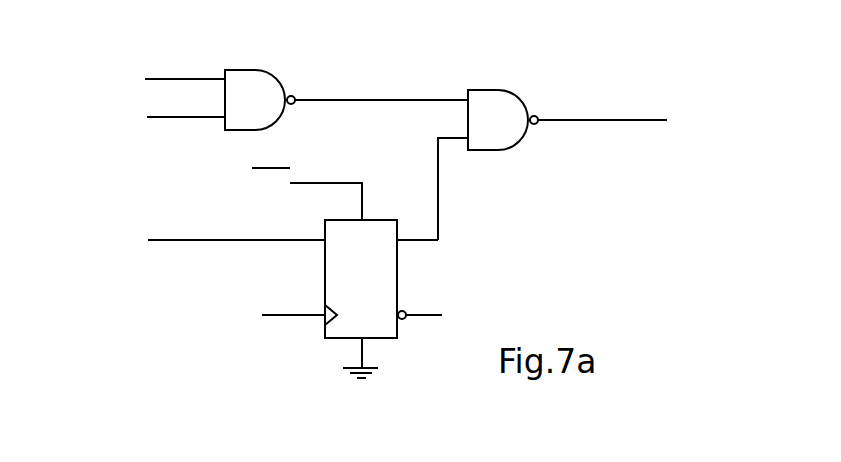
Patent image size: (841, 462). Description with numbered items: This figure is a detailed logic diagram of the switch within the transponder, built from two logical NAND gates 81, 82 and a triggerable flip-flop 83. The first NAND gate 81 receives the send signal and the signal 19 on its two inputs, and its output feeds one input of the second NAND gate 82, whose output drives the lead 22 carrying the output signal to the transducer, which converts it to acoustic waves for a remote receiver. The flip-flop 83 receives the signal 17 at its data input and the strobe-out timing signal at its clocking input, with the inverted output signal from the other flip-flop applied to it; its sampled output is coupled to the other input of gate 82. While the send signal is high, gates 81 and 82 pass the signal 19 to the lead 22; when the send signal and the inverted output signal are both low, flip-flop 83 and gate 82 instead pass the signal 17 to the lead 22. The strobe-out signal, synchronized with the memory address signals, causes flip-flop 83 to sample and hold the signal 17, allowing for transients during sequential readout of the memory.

The NAND gate 81 is at (270, 70).
The NAND gate 82 is at (498, 90).
The triggerable flip-flop 83 is at (397, 283).
The signal S17 17 is at (268, 240).
The signal S19 19 is at (183, 119).
The lead 22 is at (617, 120).